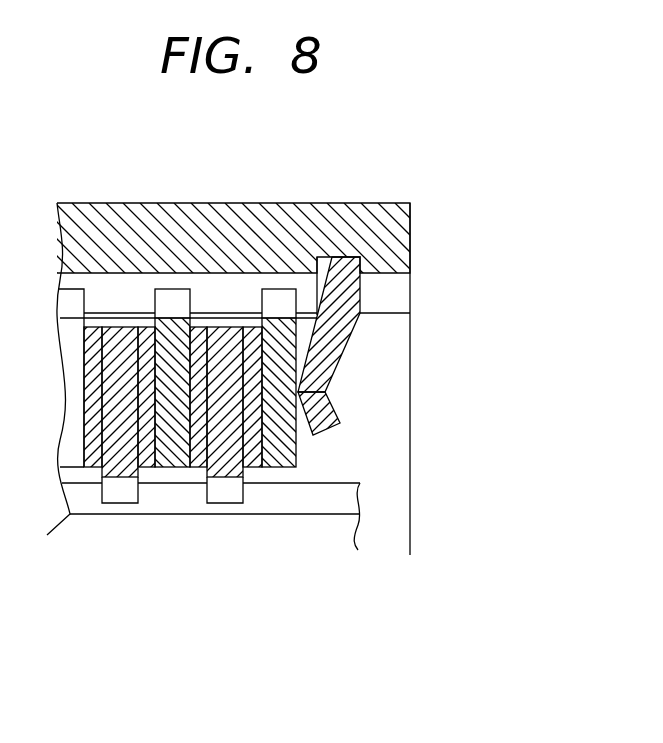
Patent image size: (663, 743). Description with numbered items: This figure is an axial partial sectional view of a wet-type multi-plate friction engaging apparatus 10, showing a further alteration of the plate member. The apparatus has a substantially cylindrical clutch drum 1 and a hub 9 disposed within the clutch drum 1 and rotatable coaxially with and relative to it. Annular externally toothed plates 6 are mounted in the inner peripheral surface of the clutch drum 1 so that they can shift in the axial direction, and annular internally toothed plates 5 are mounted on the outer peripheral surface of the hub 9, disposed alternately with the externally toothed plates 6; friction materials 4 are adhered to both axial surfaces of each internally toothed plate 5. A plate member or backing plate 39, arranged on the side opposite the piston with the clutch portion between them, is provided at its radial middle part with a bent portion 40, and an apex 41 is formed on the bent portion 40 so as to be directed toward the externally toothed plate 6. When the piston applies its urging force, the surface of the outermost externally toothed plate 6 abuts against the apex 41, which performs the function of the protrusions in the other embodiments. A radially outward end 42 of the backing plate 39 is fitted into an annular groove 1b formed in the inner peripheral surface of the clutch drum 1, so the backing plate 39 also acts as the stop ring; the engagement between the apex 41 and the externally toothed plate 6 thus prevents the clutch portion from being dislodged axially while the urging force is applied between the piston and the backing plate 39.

The clutch drum 1 is at (210, 223).
The annular groove 1b is at (322, 267).
The friction materials 4 is at (203, 468).
The internally toothed plates 5 is at (228, 497).
The externally toothed plates 6 is at (168, 298).
The hub 9 is at (350, 528).
The wet-type multi-plate friction engaging apparatus 10 is at (435, 176).
The backing plate 39 is at (350, 348).
The bent portion 40 is at (320, 410).
The apex 41 is at (292, 392).
The radially outward end 42 is at (352, 281).